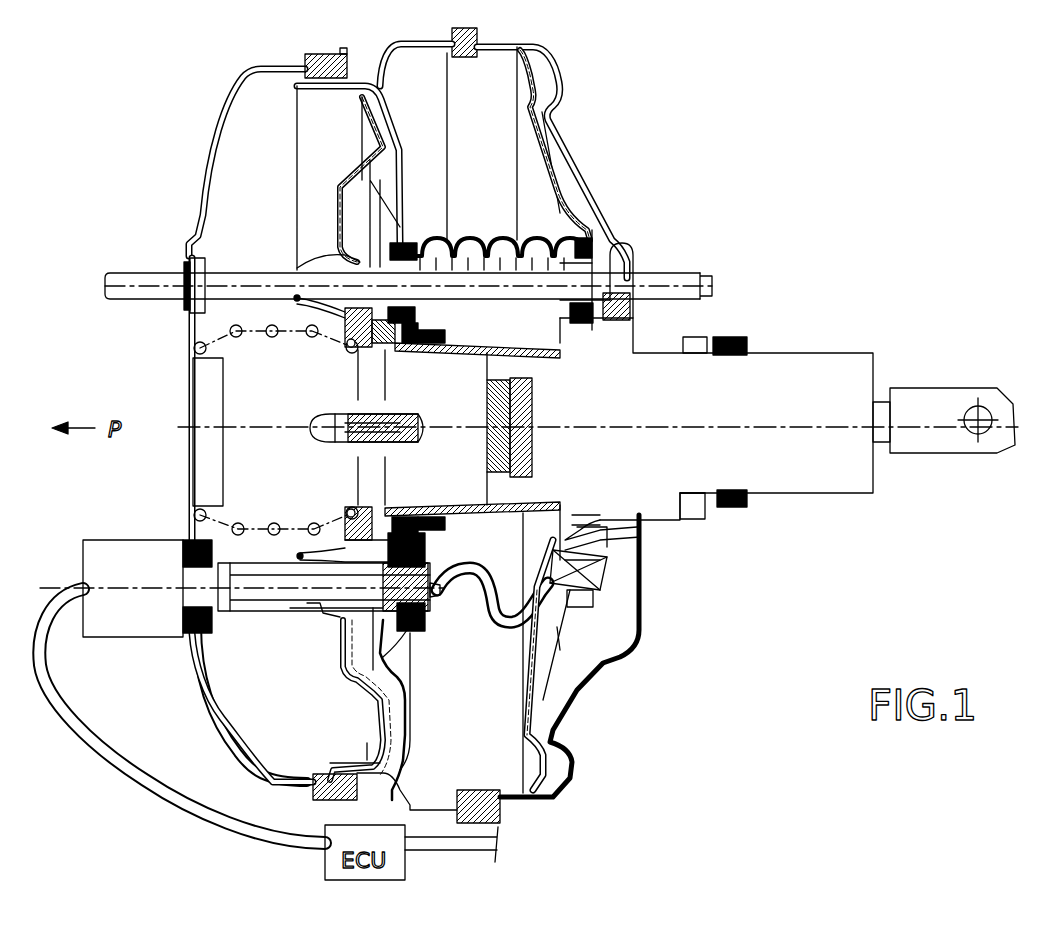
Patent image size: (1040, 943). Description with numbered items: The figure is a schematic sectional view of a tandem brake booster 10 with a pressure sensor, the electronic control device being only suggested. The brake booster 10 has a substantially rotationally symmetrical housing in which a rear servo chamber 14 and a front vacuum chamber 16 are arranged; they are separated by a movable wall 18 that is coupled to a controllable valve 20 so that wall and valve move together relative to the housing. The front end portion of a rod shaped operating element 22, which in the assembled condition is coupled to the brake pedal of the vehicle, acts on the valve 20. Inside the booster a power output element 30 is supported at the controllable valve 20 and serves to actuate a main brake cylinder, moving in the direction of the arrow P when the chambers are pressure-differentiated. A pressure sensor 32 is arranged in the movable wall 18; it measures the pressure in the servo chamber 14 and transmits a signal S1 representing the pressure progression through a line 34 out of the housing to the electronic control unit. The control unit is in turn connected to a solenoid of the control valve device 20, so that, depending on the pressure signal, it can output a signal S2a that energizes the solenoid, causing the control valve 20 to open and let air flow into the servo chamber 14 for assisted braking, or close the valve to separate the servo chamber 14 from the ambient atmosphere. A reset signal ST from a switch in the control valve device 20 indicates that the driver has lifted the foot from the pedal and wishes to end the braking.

The brake booster 10 is at (490, 425).
The servo chamber 14 is at (570, 190).
The vacuum chamber 16 is at (491, 167).
The movable wall 18 is at (547, 187).
The controllable valve 20 is at (819, 362).
The rod shaped operating element 22 is at (940, 400).
The power output element 30 is at (413, 404).
The pressure sensor 32 is at (550, 575).
The line 34 is at (506, 637).
The pressure signal S1 is at (557, 612).
The solenoid energization signal S2a is at (580, 530).
The sensor ST is at (667, 520).